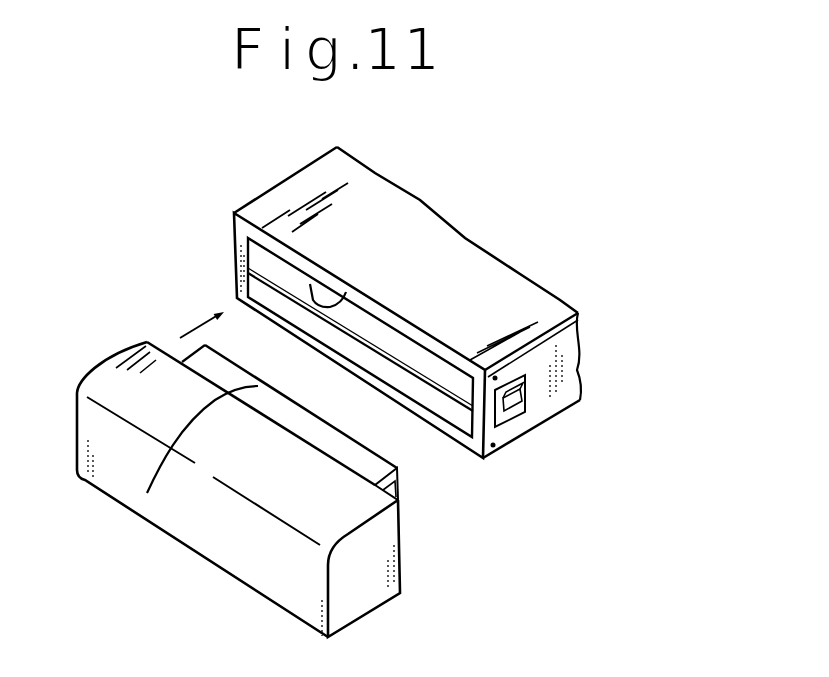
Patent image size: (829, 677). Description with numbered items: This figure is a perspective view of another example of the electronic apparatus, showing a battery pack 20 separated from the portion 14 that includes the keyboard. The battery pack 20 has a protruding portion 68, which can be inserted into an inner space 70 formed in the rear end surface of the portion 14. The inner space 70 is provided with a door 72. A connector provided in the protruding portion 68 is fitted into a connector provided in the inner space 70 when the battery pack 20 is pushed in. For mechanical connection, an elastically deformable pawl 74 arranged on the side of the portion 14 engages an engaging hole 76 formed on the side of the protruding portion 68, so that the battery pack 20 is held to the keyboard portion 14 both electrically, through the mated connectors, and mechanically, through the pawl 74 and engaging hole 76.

The portion including the keyboard 14 is at (407, 311).
The battery pack 20 is at (270, 489).
The protruding portion 68 is at (147, 493).
The inner space 70 is at (377, 367).
The door 72 is at (411, 352).
The elastically deformable pawl 74 is at (520, 408).
The engaging hole 76 is at (400, 494).